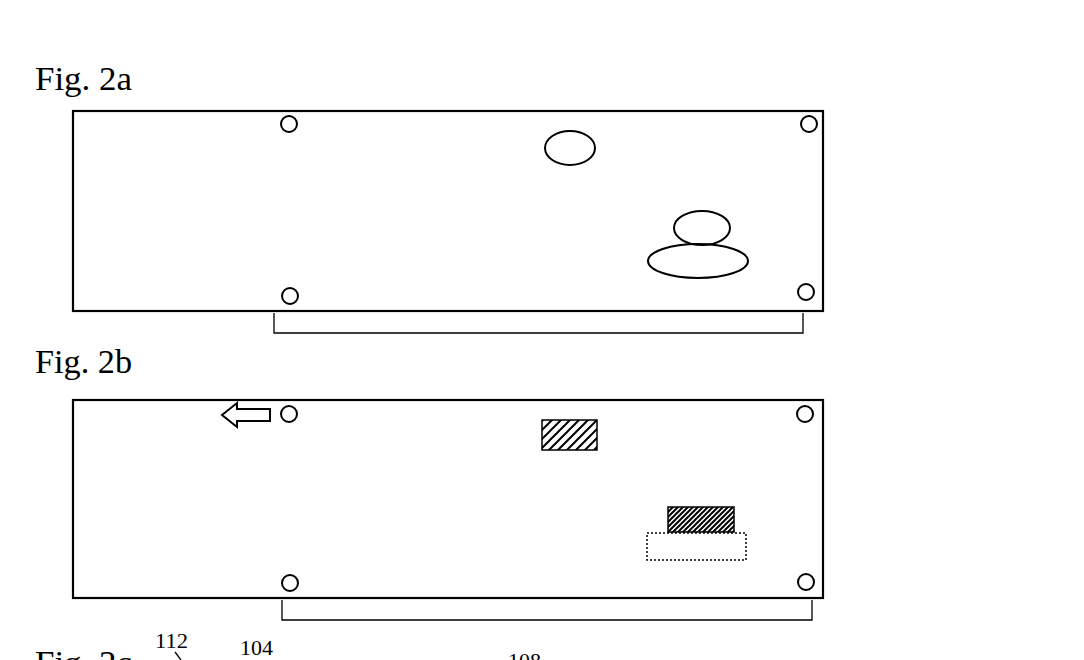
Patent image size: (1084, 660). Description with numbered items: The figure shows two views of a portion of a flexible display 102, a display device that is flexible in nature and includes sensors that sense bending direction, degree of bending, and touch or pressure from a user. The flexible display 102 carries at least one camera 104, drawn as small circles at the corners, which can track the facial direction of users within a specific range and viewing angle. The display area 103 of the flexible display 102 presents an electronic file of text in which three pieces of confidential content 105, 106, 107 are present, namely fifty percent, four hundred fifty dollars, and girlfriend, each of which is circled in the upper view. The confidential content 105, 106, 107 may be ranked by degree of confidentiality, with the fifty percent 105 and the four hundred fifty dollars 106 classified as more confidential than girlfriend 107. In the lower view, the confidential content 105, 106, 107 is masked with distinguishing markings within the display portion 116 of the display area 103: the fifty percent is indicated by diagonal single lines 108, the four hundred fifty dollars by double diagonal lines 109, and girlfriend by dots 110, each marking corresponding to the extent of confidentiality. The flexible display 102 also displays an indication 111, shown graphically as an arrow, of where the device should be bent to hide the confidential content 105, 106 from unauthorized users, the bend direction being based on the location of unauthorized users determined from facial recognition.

In FIG. 2a, the flexible display 102 is at (229, 110).
In FIG. 2b, the flexible display 102 is at (70, 475).
In FIG. 2a, the display area 103 is at (376, 126).
In FIG. 2b, the display area 103 is at (545, 490).
In FIG. 2a, the camera 104 is at (297, 118).
In FIG. 2b, the camera 104 is at (283, 407).
In FIG. 2a, the confidential content 105 is at (566, 131).
In FIG. 2a, the confidential content 106 is at (707, 211).
In FIG. 2a, the confidential content 107 is at (705, 272).
In FIG. 2b, the diagonal single lines 108 is at (565, 420).
In FIG. 2b, the double diagonal lines 109 is at (733, 507).
In FIG. 2b, the dots 110 is at (710, 561).
In FIG. 2b, the indication 111 is at (247, 407).
In FIG. 2a, the display portion 116 is at (565, 335).
In FIG. 2b, the display portion 116 is at (572, 620).